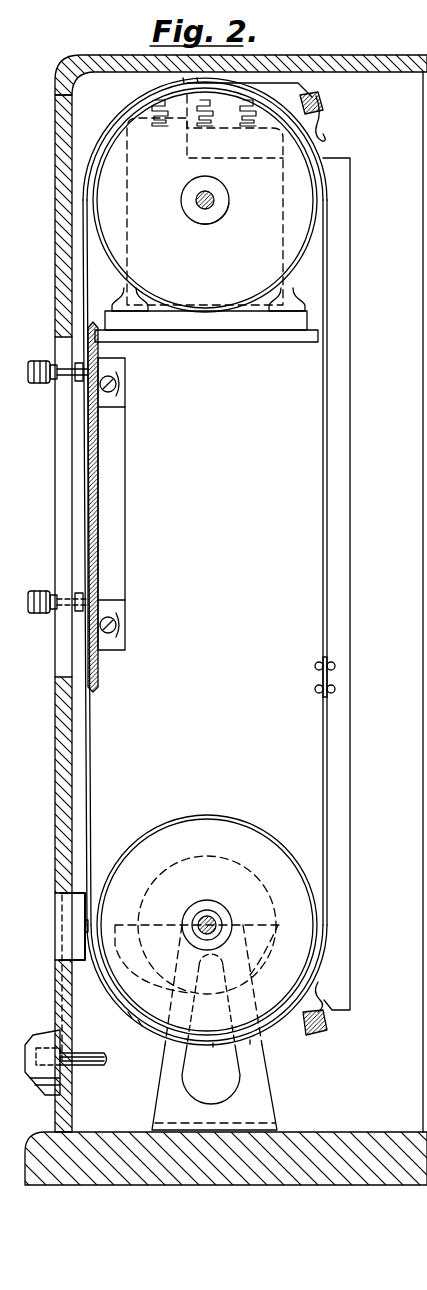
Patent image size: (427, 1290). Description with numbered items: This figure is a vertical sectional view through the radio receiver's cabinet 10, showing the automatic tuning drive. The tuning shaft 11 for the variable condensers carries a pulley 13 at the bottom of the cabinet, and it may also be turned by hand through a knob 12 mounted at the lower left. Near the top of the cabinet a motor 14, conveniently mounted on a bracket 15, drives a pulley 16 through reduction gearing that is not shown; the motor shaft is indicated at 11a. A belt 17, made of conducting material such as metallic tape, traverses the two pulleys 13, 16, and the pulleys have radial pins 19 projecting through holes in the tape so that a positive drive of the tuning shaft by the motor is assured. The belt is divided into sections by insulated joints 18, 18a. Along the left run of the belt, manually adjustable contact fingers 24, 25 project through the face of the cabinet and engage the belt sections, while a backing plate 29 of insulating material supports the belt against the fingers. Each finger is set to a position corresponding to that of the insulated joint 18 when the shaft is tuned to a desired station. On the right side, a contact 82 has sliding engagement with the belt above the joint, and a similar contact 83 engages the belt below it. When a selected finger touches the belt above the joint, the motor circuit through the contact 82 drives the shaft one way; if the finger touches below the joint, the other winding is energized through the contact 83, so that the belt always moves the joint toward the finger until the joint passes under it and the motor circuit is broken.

The cabinet 10 is at (62, 190).
The tuning shaft 11 is at (208, 912).
The motor shaft 11a is at (213, 206).
The knob 12 is at (40, 1040).
The pulley 13 is at (196, 812).
The motor 14 is at (285, 215).
The bracket 15 is at (220, 343).
The pulley 16 is at (313, 252).
The belt 17 is at (331, 582).
The insulated joint 18 is at (86, 446).
The insulated joint 18a is at (330, 678).
The radial pins 19 is at (135, 110).
The contact finger 24 is at (48, 366).
The contact finger 25 is at (48, 600).
The backing plate 29 is at (101, 519).
The contact 82 is at (314, 130).
The contact 83 is at (330, 993).